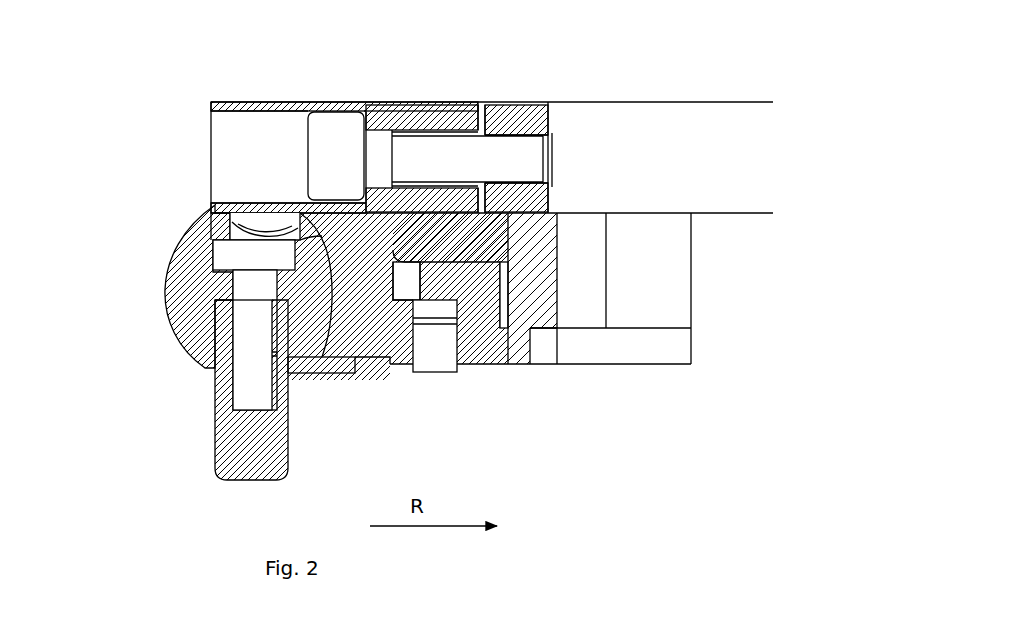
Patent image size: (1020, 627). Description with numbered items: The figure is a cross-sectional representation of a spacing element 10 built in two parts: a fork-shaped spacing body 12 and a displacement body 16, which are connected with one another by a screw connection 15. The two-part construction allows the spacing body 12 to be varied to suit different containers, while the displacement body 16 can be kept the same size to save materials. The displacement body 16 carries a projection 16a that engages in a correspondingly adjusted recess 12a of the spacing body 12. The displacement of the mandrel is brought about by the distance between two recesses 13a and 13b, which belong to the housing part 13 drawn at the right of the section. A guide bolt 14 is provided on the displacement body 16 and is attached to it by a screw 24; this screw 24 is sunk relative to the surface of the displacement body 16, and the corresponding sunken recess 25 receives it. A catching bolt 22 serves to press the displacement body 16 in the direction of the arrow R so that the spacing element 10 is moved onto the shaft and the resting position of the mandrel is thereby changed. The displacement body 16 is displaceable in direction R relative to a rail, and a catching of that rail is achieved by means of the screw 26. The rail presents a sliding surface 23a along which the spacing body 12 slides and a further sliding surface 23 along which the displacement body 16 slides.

The spacing element 10 is at (603, 428).
The spacing body 12 is at (515, 290).
The recess of the spacing body 12a is at (506, 290).
The housing part 13 is at (556, 355).
The recess 13a is at (517, 364).
The recess 13b is at (537, 336).
The guide bolt 14 is at (245, 445).
The screw connection 15 is at (433, 342).
The displacement body 16 is at (350, 373).
The projection 16a is at (408, 335).
The catching bolt 22 is at (176, 330).
The sliding surface 23 is at (322, 236).
The sliding surface 23a is at (636, 213).
The screw 24 is at (256, 250).
The sunken recess 25 is at (205, 232).
The screw 26 is at (348, 150).